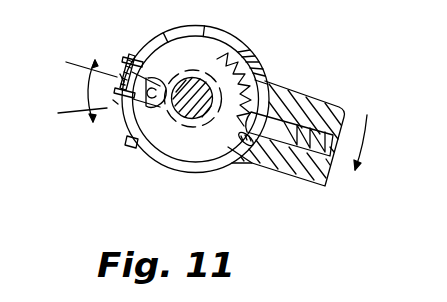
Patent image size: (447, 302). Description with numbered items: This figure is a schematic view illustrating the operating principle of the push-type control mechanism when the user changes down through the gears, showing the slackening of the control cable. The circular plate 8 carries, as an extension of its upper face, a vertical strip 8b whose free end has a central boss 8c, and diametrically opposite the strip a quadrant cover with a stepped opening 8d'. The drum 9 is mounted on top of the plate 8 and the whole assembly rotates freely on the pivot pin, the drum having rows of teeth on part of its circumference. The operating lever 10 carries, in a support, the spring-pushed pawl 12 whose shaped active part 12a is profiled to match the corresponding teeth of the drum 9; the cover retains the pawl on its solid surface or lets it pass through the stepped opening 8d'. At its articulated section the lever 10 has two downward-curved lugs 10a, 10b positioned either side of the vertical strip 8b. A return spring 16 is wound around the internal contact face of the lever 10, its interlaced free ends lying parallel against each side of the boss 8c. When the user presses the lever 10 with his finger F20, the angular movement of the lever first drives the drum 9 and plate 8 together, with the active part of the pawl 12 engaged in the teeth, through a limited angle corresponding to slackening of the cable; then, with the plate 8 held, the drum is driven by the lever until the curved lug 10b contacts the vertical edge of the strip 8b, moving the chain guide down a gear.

The circular plate 8 is at (190, 165).
The vertical strip 8b is at (113, 100).
The central boss 8c is at (120, 74).
The stepped opening 8d' is at (269, 69).
The drum 9 is at (168, 158).
The operating lever 10 is at (300, 182).
The curved lug 10a is at (166, 26).
The curved lug 10b is at (130, 146).
The pawl 12 is at (265, 170).
The shaped active part 12a is at (229, 157).
The return spring 16 is at (176, 76).
The finger F20 is at (380, 142).